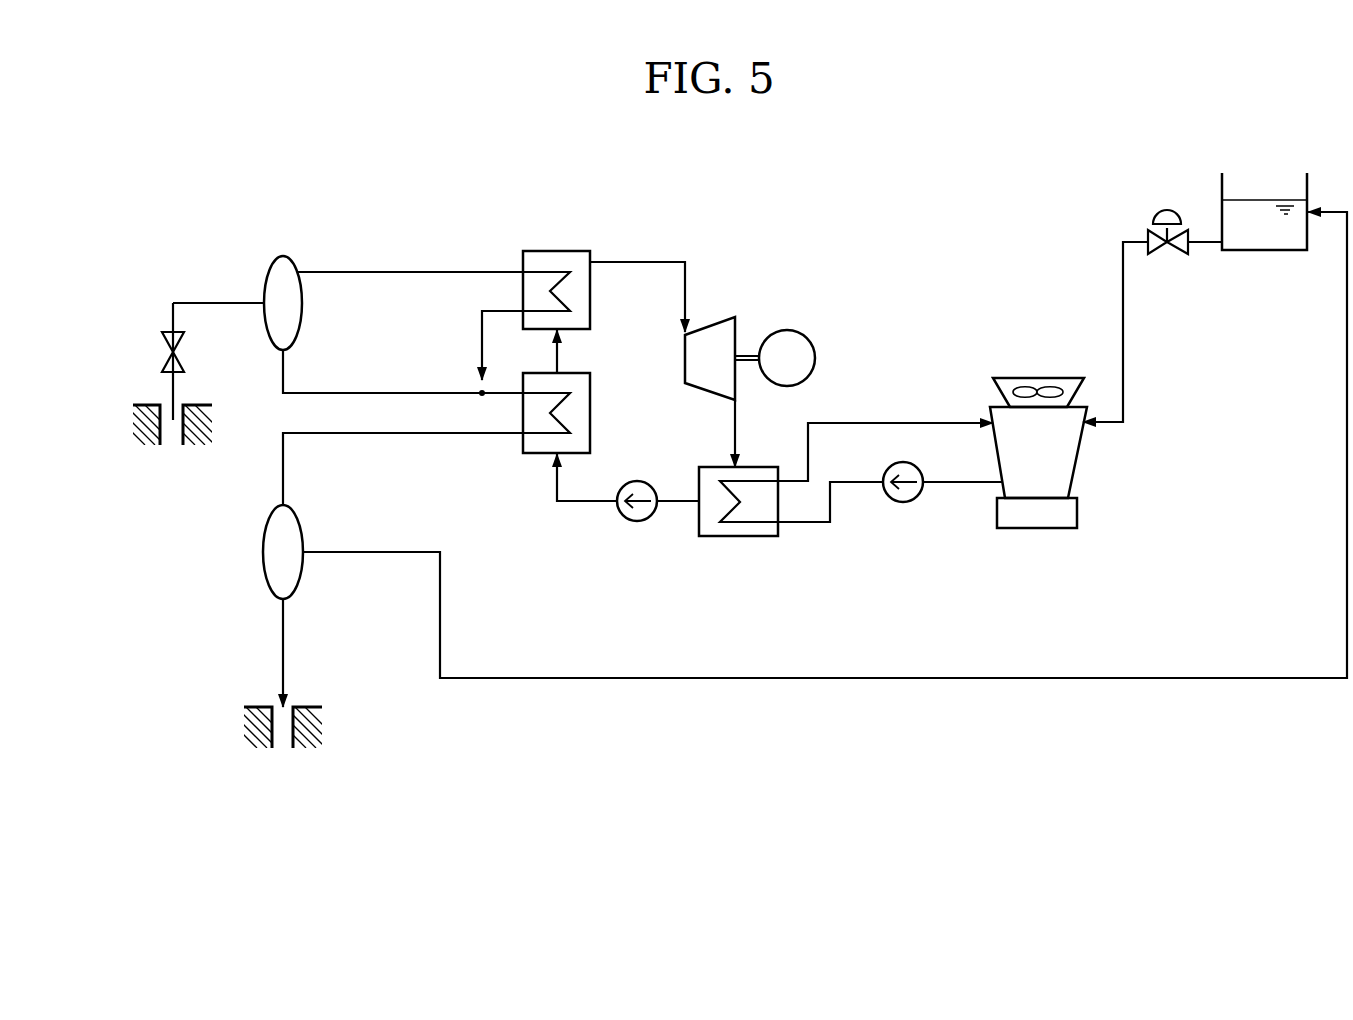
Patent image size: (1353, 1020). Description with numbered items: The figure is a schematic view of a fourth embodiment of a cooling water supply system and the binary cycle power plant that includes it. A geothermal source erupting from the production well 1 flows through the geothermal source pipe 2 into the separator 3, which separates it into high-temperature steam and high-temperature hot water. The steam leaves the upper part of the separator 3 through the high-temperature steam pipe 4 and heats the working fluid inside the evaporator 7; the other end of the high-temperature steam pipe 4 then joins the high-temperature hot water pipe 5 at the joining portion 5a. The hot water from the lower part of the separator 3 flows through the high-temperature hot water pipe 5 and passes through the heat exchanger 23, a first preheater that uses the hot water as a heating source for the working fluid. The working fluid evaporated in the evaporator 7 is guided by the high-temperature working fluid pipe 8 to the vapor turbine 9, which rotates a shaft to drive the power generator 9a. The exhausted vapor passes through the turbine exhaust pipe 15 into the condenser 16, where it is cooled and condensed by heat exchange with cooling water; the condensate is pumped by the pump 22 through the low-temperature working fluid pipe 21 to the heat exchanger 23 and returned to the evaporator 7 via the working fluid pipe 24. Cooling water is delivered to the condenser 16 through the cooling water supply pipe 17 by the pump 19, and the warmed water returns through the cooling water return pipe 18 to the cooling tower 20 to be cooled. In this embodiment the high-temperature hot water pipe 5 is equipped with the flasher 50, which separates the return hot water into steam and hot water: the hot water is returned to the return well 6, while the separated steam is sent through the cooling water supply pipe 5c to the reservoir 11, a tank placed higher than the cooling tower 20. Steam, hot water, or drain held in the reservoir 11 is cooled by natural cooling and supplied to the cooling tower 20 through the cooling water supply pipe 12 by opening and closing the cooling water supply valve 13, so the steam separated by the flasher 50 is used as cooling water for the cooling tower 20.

The production well 1 is at (128, 322).
The geothermal source pipe 2 is at (222, 300).
The separator 3 is at (281, 255).
The high-temperature steam pipe 4 is at (346, 271).
The high-temperature hot water pipe 5 is at (353, 392).
The joining portion 5a is at (480, 392).
The cooling water supply pipe 5c is at (827, 680).
The return well 6 is at (263, 681).
The evaporator 7 is at (555, 250).
The high-temperature working fluid pipe 8 is at (630, 261).
The vapor turbine 9 is at (710, 326).
The power generator 9a is at (816, 360).
The reservoir 11 is at (1260, 252).
The cooling water supply pipe 12 is at (1125, 353).
The cooling water supply valve 13 is at (1175, 256).
The turbine exhaust pipe 15 is at (737, 425).
The condenser 16 is at (733, 538).
The cooling water supply pipe 17 is at (812, 524).
The cooling water return pipe 18 is at (931, 422).
The pump 19 is at (905, 503).
The cooling tower 20 is at (1078, 452).
The low-temperature working fluid pipe 21 is at (572, 503).
The pump 22 is at (637, 522).
The heat exchanger (first preheater) 23 is at (592, 407).
The working fluid pipe 24 is at (560, 357).
The flasher 50 is at (262, 550).